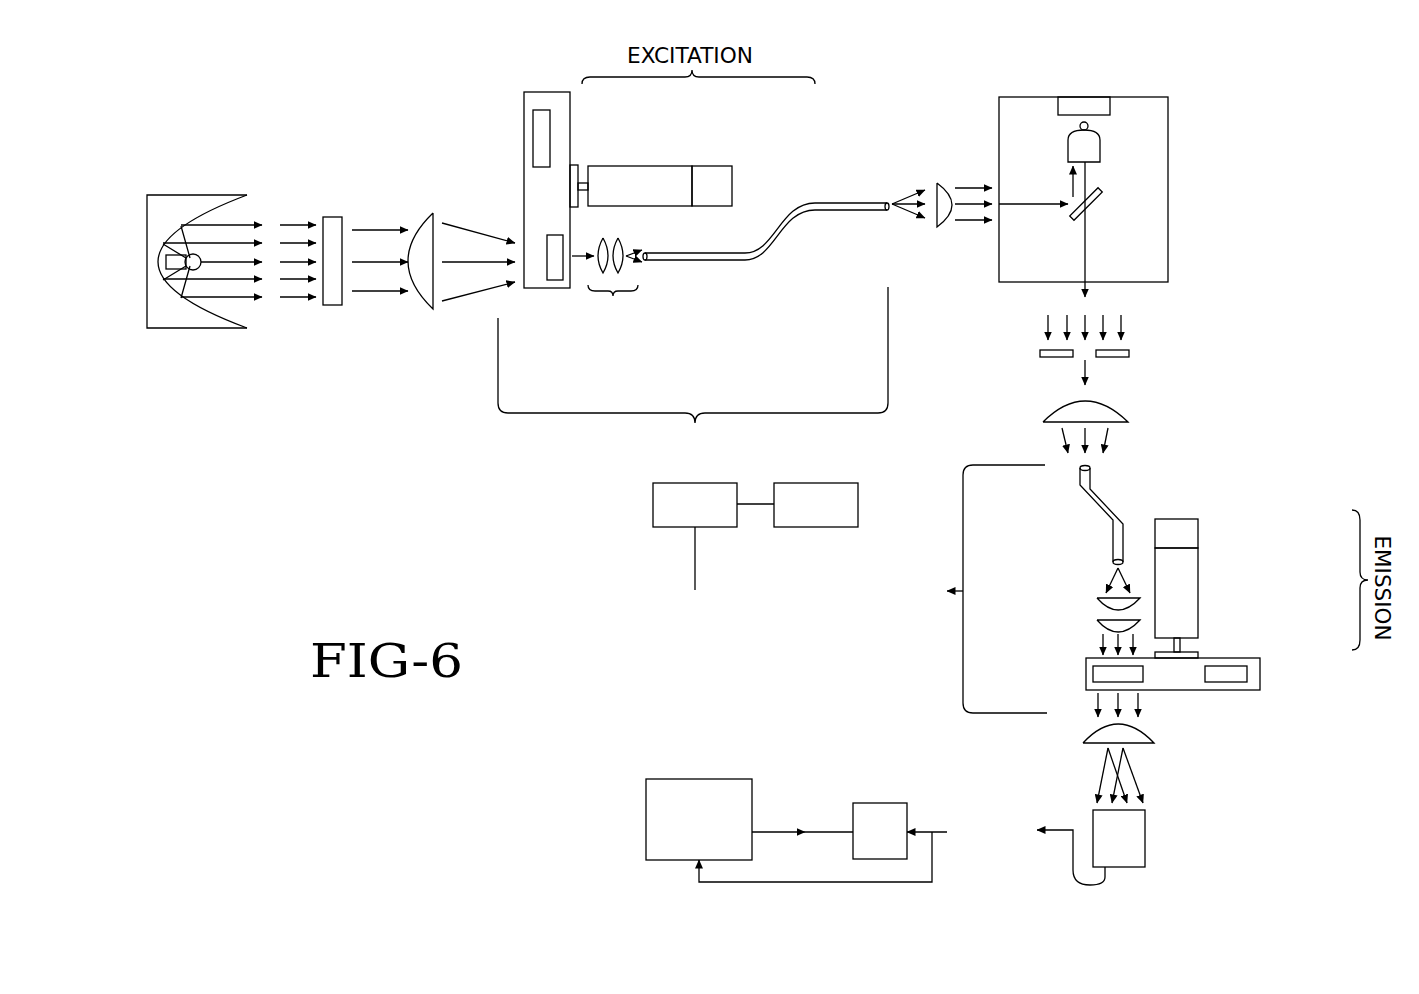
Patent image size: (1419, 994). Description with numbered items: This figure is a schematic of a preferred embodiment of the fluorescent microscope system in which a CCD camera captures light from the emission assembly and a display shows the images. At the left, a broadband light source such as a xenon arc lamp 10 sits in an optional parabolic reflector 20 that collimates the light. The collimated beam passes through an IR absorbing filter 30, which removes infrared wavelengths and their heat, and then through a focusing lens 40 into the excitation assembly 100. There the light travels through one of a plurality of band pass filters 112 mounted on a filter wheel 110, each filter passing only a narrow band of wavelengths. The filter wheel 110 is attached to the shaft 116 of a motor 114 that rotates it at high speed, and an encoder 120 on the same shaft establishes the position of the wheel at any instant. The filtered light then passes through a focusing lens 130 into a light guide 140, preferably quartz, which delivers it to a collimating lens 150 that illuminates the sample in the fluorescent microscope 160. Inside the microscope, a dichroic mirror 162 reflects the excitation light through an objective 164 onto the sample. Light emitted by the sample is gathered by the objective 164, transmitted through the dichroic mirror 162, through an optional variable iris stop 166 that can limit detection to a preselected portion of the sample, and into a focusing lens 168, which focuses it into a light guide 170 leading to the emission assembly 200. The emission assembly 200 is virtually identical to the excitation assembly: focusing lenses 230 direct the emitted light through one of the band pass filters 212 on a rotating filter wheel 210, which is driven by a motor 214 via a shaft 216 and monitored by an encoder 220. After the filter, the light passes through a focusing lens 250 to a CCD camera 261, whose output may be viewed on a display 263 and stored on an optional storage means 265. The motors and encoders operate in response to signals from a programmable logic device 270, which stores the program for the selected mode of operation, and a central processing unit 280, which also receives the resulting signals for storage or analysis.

The xenon arc lamp 10 is at (193, 330).
The parabolic reflector 20 is at (210, 202).
The IR absorbing filter 30 is at (332, 218).
The focusing lens 40 is at (422, 330).
The excitation assembly 100 is at (695, 483).
The filter wheel 110 is at (523, 140).
The band pass filters 112 is at (545, 148).
The motor 114 is at (627, 180).
The shaft 116 is at (582, 208).
The encoder 120 is at (720, 177).
The focusing lens 130 is at (613, 296).
The light guide 140 is at (777, 232).
The collimating lens 150 is at (948, 175).
The fluorescent microscope 160 is at (1150, 97).
The dichroic mirror 162 is at (1098, 192).
The objective 164 is at (1090, 143).
The variable iris stop 166 is at (1120, 350).
The focusing lens 168 is at (1046, 416).
The light guide 170 is at (1093, 500).
The emission assembly 200 is at (695, 590).
The filter wheel 210 is at (1260, 670).
The band pass filters 212 is at (1106, 672).
The motor 214 is at (1188, 582).
The shaft 216 is at (1180, 645).
The encoder 220 is at (1188, 525).
The focusing lenses 230 is at (1095, 608).
The focusing lens 250 is at (1098, 735).
The CCD camera 261 is at (1137, 830).
The display 263 is at (868, 803).
The optional storage means 265 is at (683, 779).
The programmable logic device 270 is at (675, 527).
The central processing unit 280 is at (823, 527).